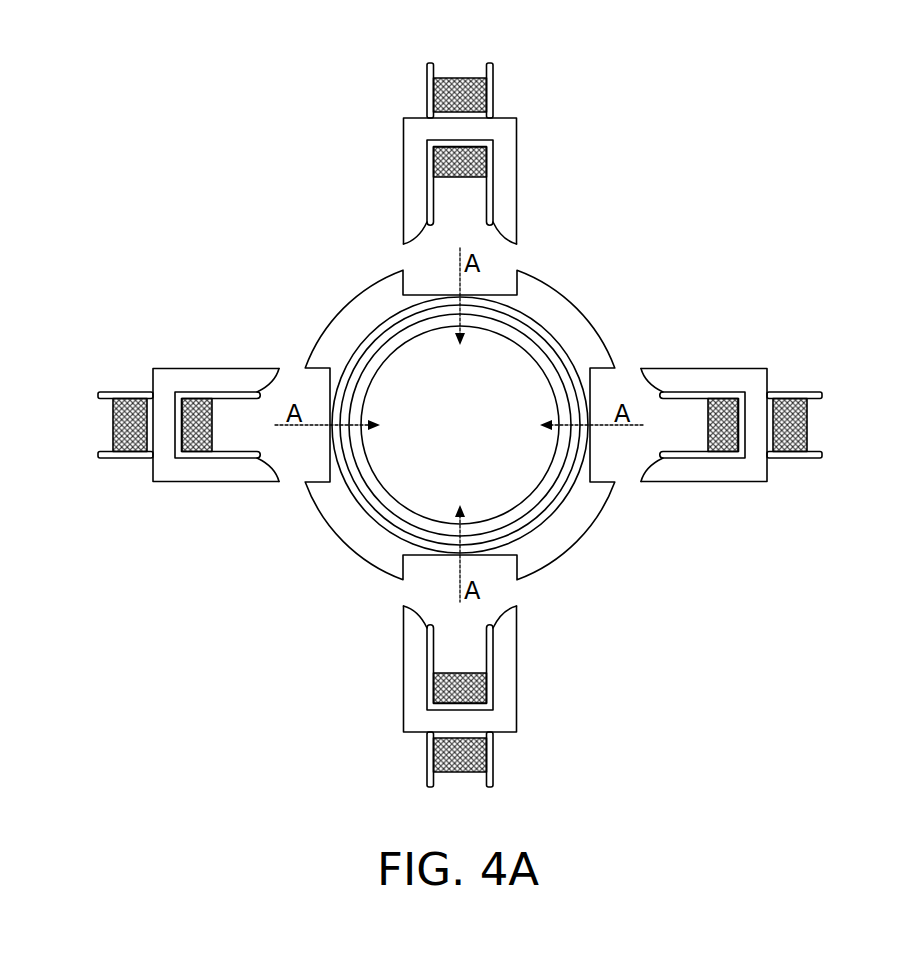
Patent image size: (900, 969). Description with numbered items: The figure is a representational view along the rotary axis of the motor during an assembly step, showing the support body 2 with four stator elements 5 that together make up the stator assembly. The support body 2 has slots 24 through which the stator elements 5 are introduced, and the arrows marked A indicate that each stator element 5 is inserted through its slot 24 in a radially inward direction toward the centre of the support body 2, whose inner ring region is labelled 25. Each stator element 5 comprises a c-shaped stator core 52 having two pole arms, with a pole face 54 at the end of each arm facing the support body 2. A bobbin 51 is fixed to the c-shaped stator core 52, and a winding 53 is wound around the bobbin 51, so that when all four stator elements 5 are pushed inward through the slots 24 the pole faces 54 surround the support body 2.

The support body 2 is at (420, 448).
The stator element 5 is at (489, 425).
The slot 24 is at (325, 468).
The rotor magnet ring 25 is at (408, 398).
The bobbin 51 is at (800, 463).
The c-shaped stator core 52 is at (708, 472).
The winding 53 is at (808, 430).
The pole face 54 is at (648, 383).